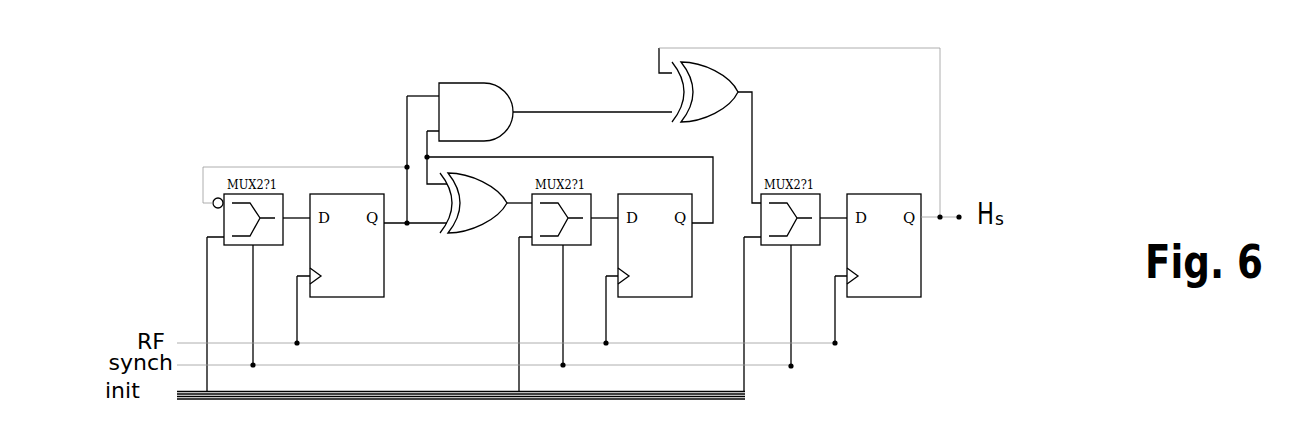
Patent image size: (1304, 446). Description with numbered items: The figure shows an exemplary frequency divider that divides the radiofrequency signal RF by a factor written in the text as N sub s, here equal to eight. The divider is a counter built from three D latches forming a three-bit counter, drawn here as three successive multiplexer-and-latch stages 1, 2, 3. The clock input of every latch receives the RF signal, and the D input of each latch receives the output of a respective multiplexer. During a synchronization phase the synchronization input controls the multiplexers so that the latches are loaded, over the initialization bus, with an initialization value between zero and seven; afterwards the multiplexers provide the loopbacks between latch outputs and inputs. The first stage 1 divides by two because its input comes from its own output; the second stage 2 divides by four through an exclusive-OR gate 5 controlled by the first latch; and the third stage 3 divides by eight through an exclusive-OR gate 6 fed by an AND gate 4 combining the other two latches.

The first MUX2:1 / DFF shift-register stage 1 is at (327, 284).
The second MUX2:1 / DFF shift-register stage 2 is at (570, 274).
The third MUX2:1 / DFF shift-register stage 3 is at (848, 241).
The AND gate 4 is at (539, 153).
The first XOR gate 5 is at (473, 203).
The second XOR gate 6 is at (698, 85).